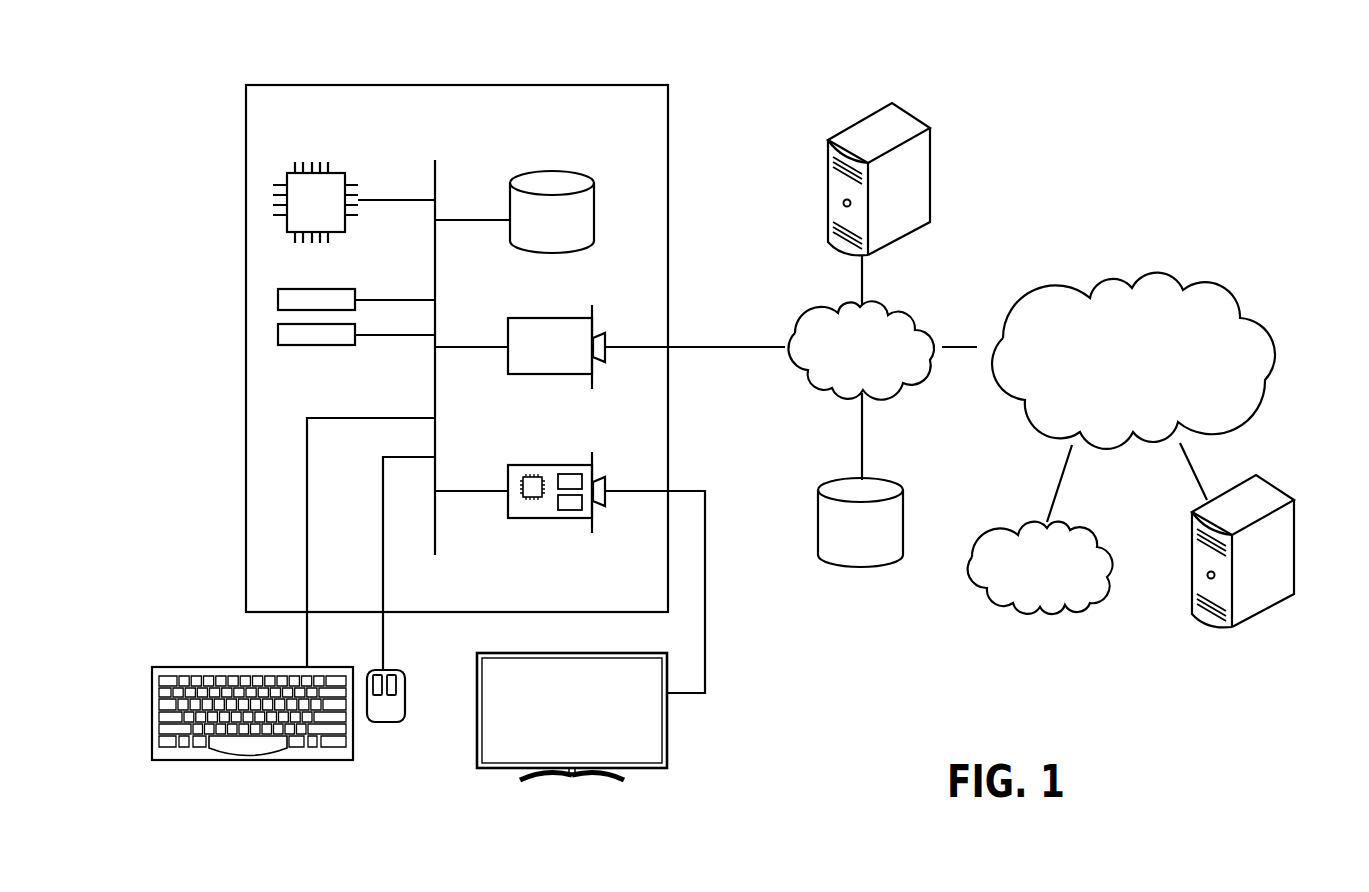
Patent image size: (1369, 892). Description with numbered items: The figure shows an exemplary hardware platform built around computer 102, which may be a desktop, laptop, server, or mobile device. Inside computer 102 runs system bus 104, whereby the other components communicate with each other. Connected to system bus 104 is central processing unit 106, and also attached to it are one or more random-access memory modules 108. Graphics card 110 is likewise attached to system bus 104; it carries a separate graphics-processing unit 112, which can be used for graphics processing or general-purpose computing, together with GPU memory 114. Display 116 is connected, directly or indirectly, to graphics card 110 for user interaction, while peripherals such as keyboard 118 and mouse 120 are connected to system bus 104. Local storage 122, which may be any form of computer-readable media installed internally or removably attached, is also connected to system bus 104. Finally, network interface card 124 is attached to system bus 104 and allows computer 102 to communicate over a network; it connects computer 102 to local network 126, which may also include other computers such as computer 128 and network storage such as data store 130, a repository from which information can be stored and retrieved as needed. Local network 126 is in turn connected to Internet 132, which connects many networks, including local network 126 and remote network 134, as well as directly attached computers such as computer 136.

The computer 102 is at (620, 85).
The system bus 104 is at (437, 163).
The central processing unit 106 is at (340, 170).
The random-access memory modules 108 is at (357, 333).
The graphics card 110 is at (570, 555).
The graphics-processing unit 112 is at (530, 498).
The GPU memory 114 is at (567, 511).
The display 116 is at (670, 747).
The keyboard 118 is at (255, 762).
The mouse 120 is at (382, 725).
The local storage 122 is at (596, 203).
The network interface card 124 is at (508, 322).
The local network 126 is at (915, 302).
The computer 128 is at (920, 112).
The data store 130 is at (895, 480).
The Internet 132 is at (1178, 262).
The remote network 134 is at (1100, 521).
The computer 136 is at (1270, 480).